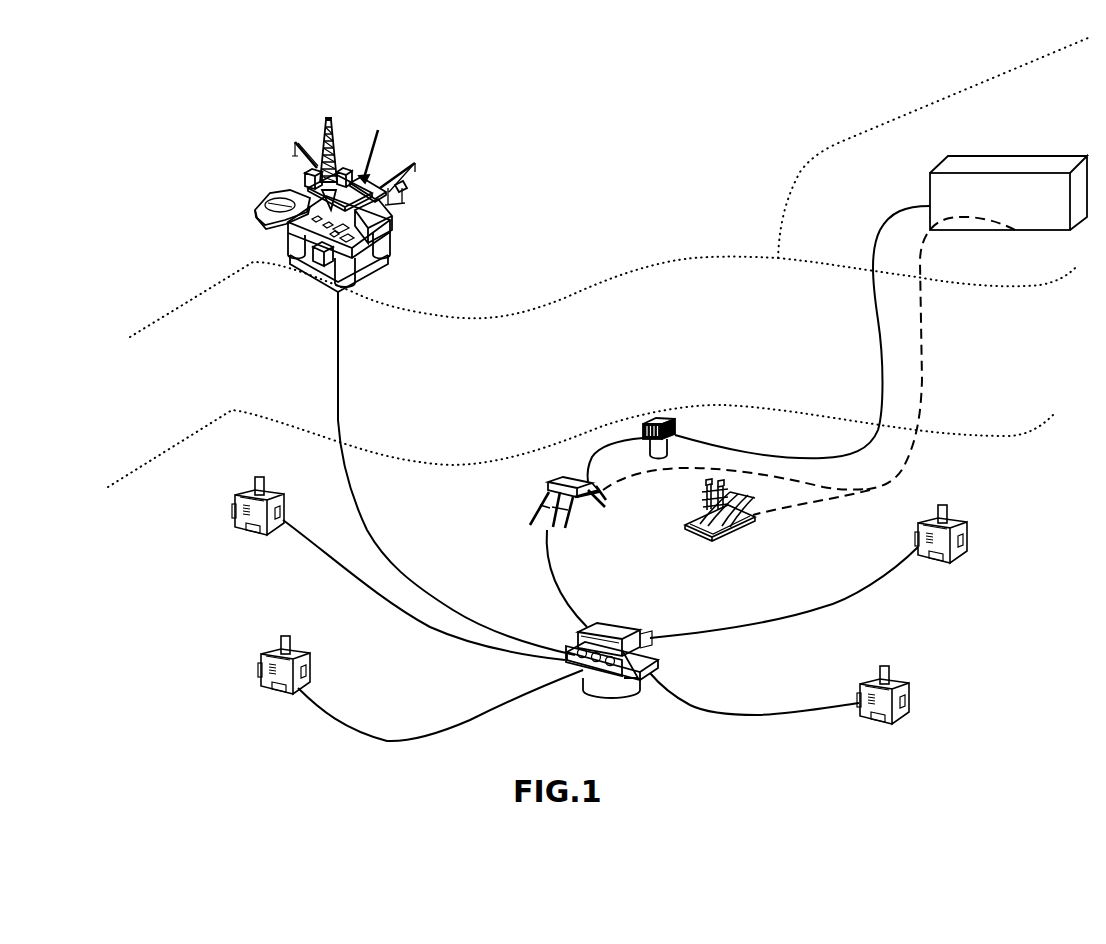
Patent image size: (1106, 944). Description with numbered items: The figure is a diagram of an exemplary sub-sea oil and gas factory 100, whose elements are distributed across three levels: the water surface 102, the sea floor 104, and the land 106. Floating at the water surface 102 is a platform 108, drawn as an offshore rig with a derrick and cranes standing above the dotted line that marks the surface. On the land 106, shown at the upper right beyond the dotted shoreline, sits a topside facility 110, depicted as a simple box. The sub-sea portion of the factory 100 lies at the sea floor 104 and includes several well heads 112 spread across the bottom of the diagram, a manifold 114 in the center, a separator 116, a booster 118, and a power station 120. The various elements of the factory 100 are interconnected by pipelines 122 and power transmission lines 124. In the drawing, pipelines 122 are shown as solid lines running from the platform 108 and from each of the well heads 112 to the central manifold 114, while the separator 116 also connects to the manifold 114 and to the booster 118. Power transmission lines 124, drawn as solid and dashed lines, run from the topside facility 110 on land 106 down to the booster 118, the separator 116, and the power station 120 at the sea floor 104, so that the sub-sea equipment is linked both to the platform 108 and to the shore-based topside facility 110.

The sub-sea oil and gas factory 100 is at (223, 112).
The water surface 102 is at (177, 305).
The sea floor 104 is at (160, 457).
The land 106 is at (800, 173).
The platform 108 is at (392, 212).
The topside facility 110 is at (1031, 158).
The well heads 112 is at (234, 509).
The manifold 114 is at (627, 677).
The separator 116 is at (530, 521).
The booster 118 is at (658, 419).
The power station 120 is at (735, 533).
The pipelines 122 is at (403, 622).
The power transmission lines 124 is at (924, 362).